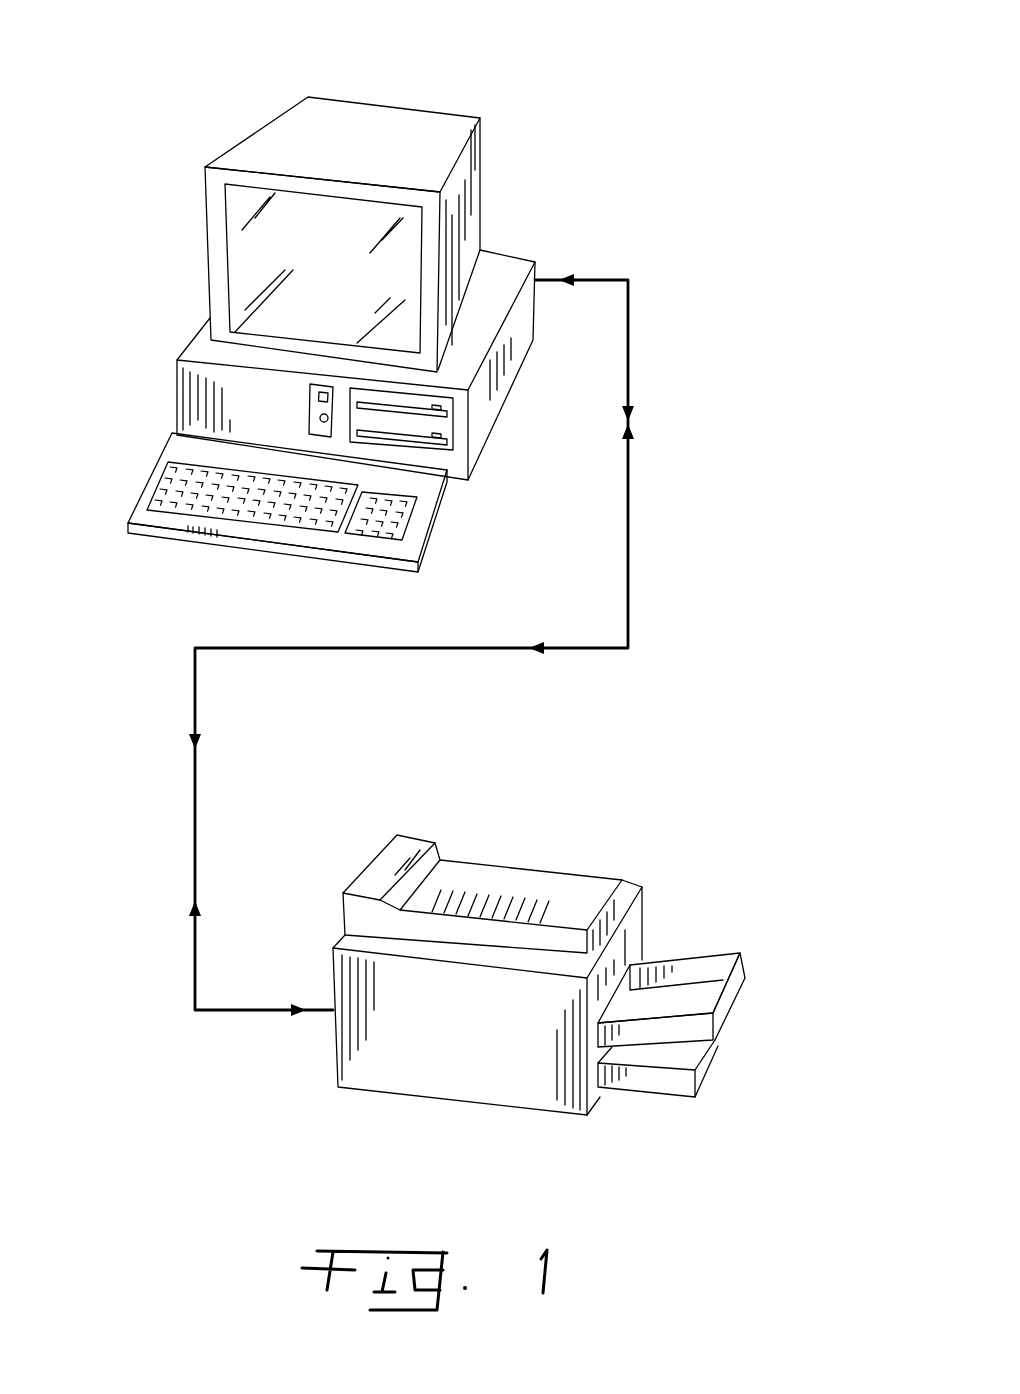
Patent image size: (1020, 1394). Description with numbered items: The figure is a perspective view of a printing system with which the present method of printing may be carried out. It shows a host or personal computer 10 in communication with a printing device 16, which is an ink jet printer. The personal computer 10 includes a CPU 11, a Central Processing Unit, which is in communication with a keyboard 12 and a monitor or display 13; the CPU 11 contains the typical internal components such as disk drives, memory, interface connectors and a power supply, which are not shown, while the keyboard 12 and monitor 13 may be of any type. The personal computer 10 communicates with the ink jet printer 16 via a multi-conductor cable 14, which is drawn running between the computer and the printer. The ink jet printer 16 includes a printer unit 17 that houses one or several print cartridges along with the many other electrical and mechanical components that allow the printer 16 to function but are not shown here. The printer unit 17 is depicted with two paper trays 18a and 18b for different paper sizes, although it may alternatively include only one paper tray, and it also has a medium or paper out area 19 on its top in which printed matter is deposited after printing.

The personal computer 10 is at (547, 106).
The CPU 11 is at (180, 383).
The keyboard 12 is at (180, 452).
The monitor 13 is at (235, 152).
The multi-conductor cable 14 is at (628, 570).
The printing device 16 is at (639, 820).
The printer unit 17 is at (370, 1073).
The paper tray 18a is at (705, 963).
The paper tray 18b is at (693, 1070).
The paper out area 19 is at (486, 872).